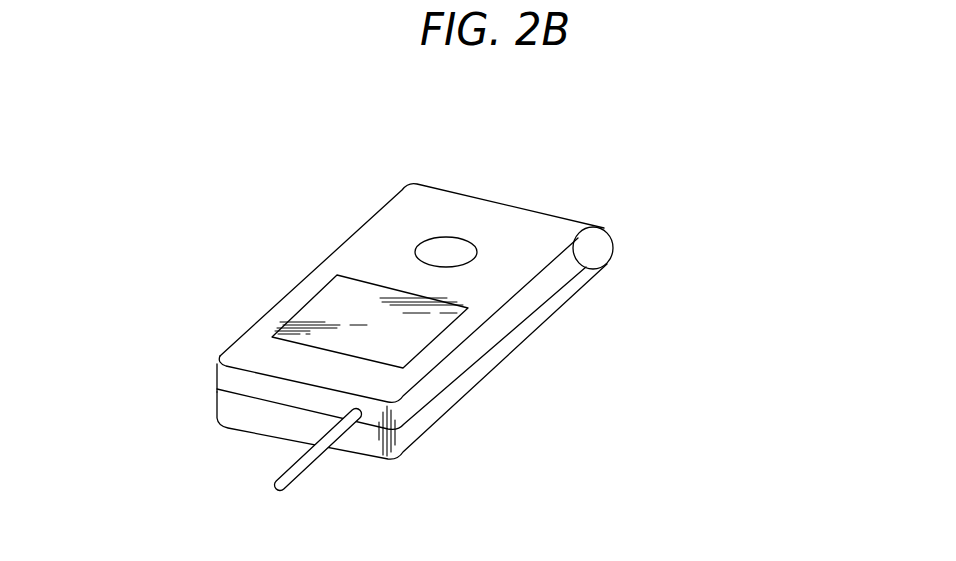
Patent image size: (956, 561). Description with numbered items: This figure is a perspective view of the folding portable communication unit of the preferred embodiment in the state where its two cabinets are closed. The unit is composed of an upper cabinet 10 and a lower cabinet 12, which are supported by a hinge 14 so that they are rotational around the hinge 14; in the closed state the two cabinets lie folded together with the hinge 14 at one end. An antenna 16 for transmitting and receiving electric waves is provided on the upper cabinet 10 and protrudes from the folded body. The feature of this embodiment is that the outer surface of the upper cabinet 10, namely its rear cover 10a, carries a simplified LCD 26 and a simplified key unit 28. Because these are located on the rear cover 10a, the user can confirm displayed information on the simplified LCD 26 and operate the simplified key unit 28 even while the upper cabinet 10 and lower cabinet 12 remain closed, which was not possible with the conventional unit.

The upper cabinet 10 is at (528, 297).
The rear cover 10a is at (497, 217).
The lower cabinet 12 is at (473, 375).
The hinge 14 is at (603, 240).
The antenna 16 is at (303, 457).
The simplified LCD 26 is at (309, 300).
The simplified key unit 28 is at (447, 238).